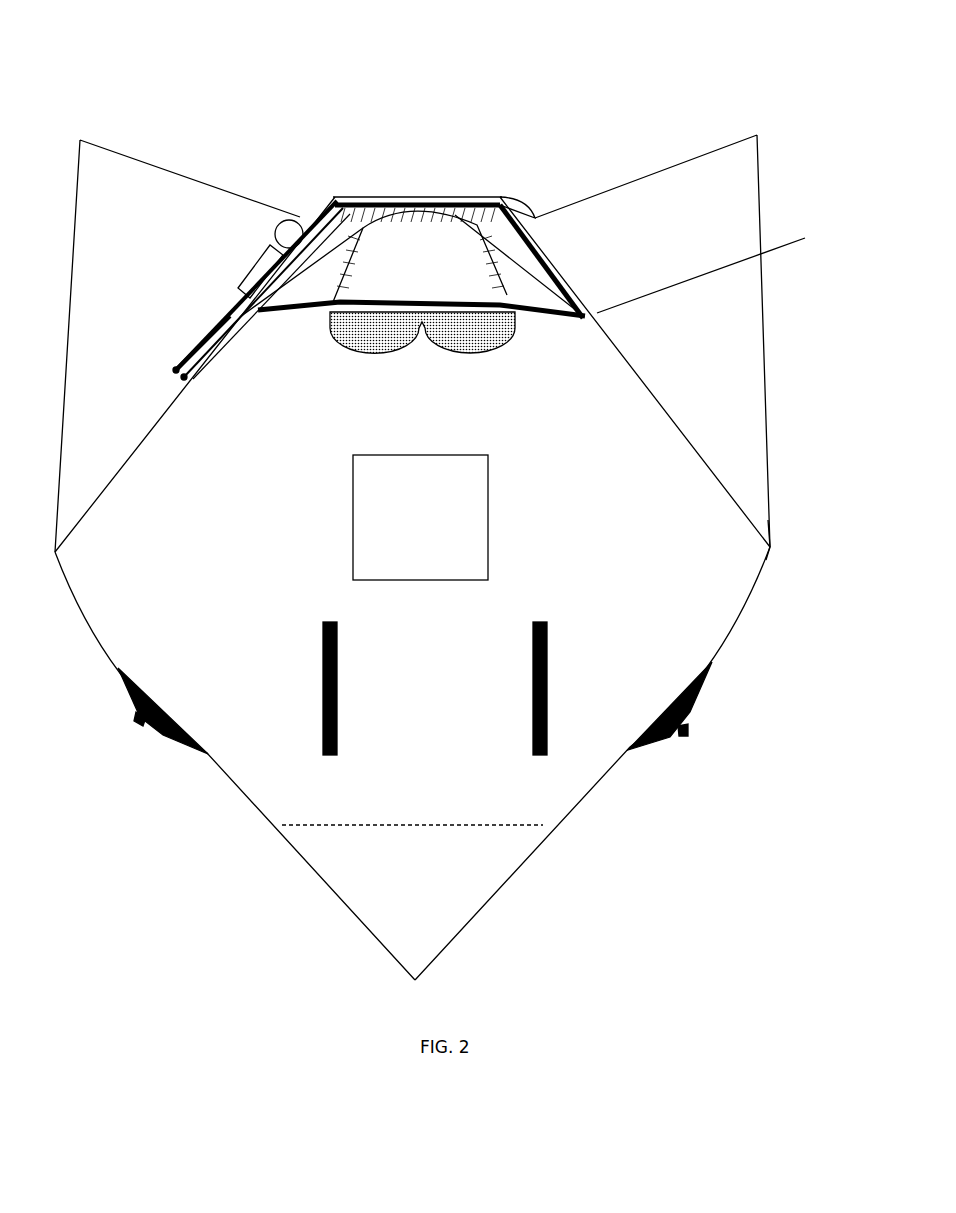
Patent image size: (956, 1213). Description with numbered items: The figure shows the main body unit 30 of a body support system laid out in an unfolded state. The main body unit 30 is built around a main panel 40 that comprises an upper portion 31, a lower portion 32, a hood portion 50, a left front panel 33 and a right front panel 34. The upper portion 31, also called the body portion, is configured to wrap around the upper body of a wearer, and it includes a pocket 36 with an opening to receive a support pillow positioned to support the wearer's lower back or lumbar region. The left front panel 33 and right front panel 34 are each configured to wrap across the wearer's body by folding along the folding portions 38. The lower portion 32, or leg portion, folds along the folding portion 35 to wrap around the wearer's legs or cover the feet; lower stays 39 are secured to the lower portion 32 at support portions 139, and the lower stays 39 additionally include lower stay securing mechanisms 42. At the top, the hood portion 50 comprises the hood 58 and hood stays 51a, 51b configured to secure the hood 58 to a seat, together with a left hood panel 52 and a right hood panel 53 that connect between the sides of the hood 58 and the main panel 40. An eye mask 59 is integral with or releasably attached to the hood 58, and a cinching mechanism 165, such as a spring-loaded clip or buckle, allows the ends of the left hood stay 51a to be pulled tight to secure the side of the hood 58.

The main body unit 30 is at (447, 501).
The upper portion 31 is at (415, 440).
The lower portion 32 is at (412, 763).
The left front panel 33 is at (657, 237).
The right front panel 34 is at (182, 210).
The folding portion 35 is at (412, 810).
The pocket 36 is at (488, 517).
The folding portions 38 is at (153, 445).
The lower stays 39 is at (120, 700).
The main panel 40 is at (673, 542).
The lower stay securing mechanisms 42 is at (140, 718).
The hood portion 50 is at (461, 172).
The left hood stay 51a is at (532, 212).
The hood stay 51b is at (306, 207).
The left hood panel 52 is at (525, 196).
The right hood panel 53 is at (335, 200).
The hood 58 is at (418, 253).
The eye mask 59 is at (503, 350).
The support portions 139 is at (553, 737).
The cinching mechanism 165 is at (222, 325).